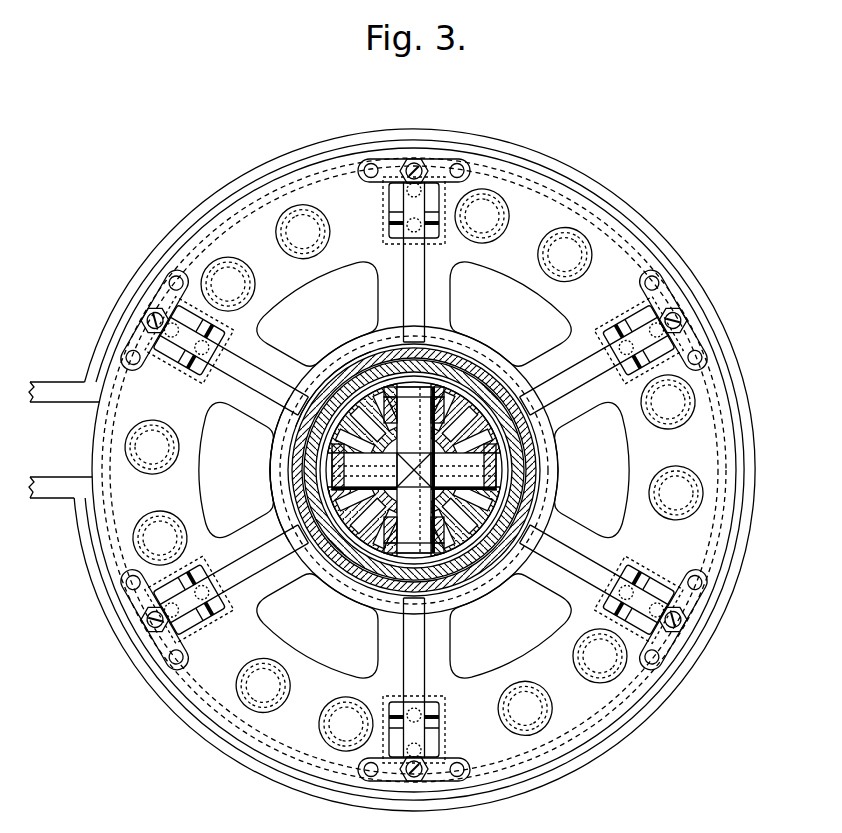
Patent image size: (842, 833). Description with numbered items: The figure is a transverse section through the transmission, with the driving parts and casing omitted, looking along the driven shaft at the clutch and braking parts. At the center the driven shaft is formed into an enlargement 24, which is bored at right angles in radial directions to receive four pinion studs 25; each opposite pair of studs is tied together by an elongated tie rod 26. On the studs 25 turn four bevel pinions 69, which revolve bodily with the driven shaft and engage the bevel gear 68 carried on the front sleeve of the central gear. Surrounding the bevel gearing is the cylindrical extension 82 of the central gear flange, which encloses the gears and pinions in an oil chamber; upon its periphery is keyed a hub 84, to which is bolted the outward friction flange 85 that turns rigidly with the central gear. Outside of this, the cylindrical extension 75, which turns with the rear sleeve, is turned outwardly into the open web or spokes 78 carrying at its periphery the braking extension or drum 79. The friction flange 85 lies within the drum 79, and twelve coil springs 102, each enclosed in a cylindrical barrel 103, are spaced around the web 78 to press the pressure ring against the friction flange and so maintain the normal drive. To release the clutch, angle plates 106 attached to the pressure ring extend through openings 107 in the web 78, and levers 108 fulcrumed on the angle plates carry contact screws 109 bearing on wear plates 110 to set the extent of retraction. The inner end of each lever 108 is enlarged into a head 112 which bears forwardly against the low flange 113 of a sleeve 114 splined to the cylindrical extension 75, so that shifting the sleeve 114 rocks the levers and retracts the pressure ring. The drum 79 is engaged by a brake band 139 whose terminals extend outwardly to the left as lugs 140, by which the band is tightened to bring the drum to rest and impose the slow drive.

The enlargement 24 is at (414, 467).
The pinion studs 25 is at (414, 470).
The tie rod 26 is at (415, 470).
The bevel gear 68 is at (426, 501).
The bevel pinions 69 is at (414, 505).
The cylindrical extension 75 is at (414, 467).
The web 78 is at (236, 467).
The braking extension 79 is at (105, 440).
The cylindrical extension 82 is at (334, 373).
The hub 84 is at (264, 470).
The friction flange 85 is at (325, 316).
The coil springs 102 is at (414, 470).
The cylindrical barrel 103 is at (414, 470).
The angle plates 106 is at (396, 210).
The openings 107 is at (407, 182).
The levers 108 is at (402, 262).
The contact screw 109 is at (415, 144).
The wear plates 110 is at (373, 141).
The head 112 is at (414, 450).
The low flange 113 is at (414, 461).
The sleeve 114 is at (414, 470).
The brake band 139 is at (138, 290).
The lugs 140 is at (63, 382).